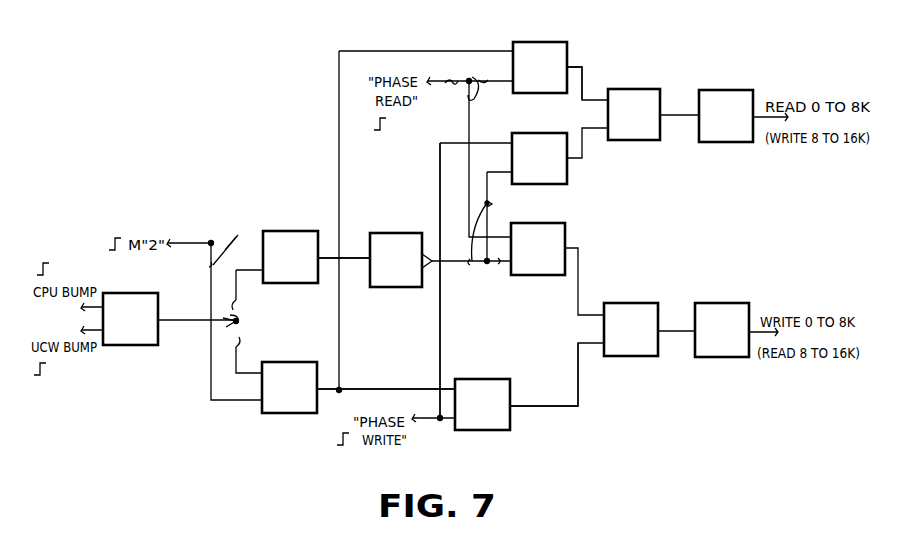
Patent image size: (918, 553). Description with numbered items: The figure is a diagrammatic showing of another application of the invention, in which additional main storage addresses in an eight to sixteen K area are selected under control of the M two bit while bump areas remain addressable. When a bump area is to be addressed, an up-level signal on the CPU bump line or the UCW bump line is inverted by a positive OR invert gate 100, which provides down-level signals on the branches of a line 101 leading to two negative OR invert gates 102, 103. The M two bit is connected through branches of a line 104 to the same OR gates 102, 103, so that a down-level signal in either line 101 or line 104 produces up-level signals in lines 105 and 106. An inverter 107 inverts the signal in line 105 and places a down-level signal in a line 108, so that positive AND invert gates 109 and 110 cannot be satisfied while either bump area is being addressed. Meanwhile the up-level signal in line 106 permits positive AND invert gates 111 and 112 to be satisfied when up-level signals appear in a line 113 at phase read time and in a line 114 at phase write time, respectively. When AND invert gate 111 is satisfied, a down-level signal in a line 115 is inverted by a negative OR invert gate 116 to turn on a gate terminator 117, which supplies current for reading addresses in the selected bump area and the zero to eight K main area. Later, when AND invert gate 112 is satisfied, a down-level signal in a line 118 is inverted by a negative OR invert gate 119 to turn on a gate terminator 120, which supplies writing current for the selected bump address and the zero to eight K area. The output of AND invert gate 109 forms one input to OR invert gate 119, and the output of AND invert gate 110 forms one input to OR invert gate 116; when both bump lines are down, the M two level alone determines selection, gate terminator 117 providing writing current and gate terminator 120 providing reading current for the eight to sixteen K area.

The positive OR invert gate 100 is at (128, 294).
The line 101 is at (240, 326).
The negative OR invert gate 102 is at (290, 236).
The negative OR invert gate 103 is at (290, 364).
The line 104 is at (234, 238).
The line 105 is at (351, 258).
The line 106 is at (384, 393).
The inverter 107 is at (397, 235).
The line 108 is at (488, 204).
The positive AND invert gate 109 is at (565, 230).
The positive AND invert gate 110 is at (568, 180).
The positive AND invert gate 111 is at (568, 46).
The positive AND invert gate 112 is at (479, 382).
The line 113 is at (445, 82).
The line 114 is at (442, 338).
The line 115 is at (587, 81).
The negative OR invert gate 116 is at (640, 90).
The gate terminator 117 is at (725, 91).
The line 118 is at (575, 388).
The negative OR invert gate 119 is at (630, 304).
The gate terminator 120 is at (720, 304).